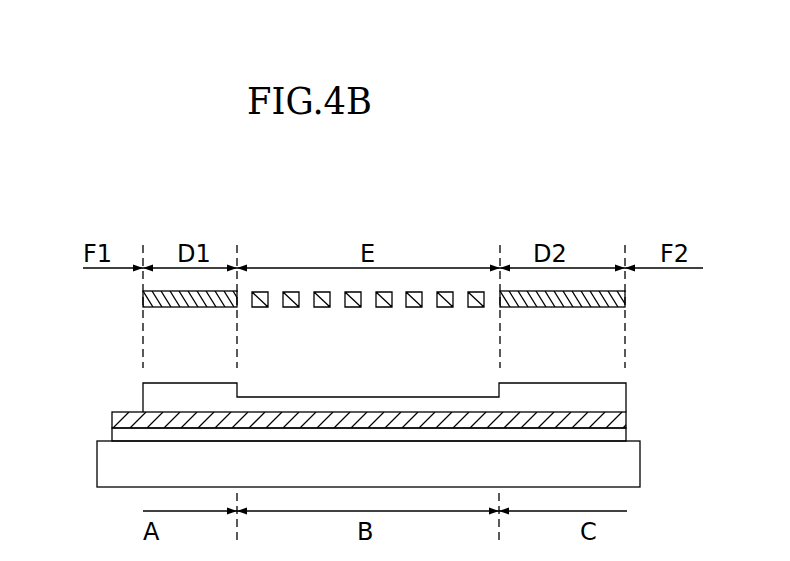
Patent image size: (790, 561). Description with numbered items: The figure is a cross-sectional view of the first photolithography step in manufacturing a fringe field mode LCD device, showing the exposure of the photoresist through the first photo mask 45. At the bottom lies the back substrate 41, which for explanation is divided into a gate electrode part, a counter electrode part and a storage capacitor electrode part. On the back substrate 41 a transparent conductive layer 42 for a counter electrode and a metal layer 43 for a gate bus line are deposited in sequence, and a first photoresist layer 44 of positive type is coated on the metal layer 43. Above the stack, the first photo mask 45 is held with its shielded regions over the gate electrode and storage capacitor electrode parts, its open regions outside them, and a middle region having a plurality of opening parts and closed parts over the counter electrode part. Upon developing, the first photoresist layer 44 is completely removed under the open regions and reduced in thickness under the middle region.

The back substrate 41 is at (632, 467).
The transparent conductive layer 42 is at (618, 437).
The metal layer 43 is at (617, 423).
The first photoresist layer 44 is at (618, 398).
The first photo mask 45 is at (620, 300).